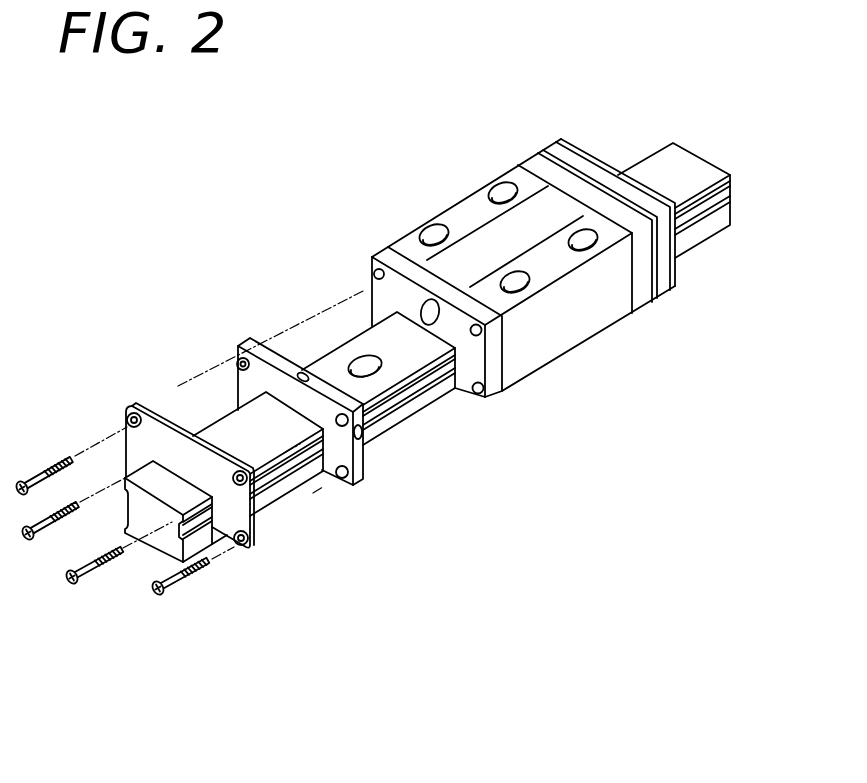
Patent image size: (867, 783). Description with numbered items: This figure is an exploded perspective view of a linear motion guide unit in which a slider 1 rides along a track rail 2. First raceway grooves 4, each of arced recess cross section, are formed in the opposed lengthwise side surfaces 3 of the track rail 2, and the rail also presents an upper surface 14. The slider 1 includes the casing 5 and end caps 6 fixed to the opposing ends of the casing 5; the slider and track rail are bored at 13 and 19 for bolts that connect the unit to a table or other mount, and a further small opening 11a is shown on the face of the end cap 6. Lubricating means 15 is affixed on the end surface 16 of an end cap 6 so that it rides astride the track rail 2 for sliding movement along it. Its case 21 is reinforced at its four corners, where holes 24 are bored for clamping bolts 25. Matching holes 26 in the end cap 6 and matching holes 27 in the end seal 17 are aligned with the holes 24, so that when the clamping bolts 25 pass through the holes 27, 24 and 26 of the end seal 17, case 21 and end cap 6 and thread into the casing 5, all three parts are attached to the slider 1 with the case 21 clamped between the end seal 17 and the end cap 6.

The slider 1 is at (591, 337).
The track rail 2 is at (335, 362).
The lengthwise side surfaces 3 is at (703, 227).
The first raceway grooves 4 is at (712, 203).
The casing 5 is at (465, 208).
The end caps 6 is at (540, 168).
The grease nipple hole 11a is at (428, 300).
The bolt hole 13 is at (362, 358).
The upper surface 14 is at (660, 170).
The lubricating means 15 is at (361, 489).
The end surface 16 is at (466, 362).
The end seal 17 is at (167, 438).
The bolt hole 19 is at (502, 190).
The case 21 is at (265, 352).
The holes 24 is at (240, 360).
The clamping bolts 25 is at (50, 470).
The matching holes 26 is at (374, 272).
The matching holes 27 is at (128, 416).